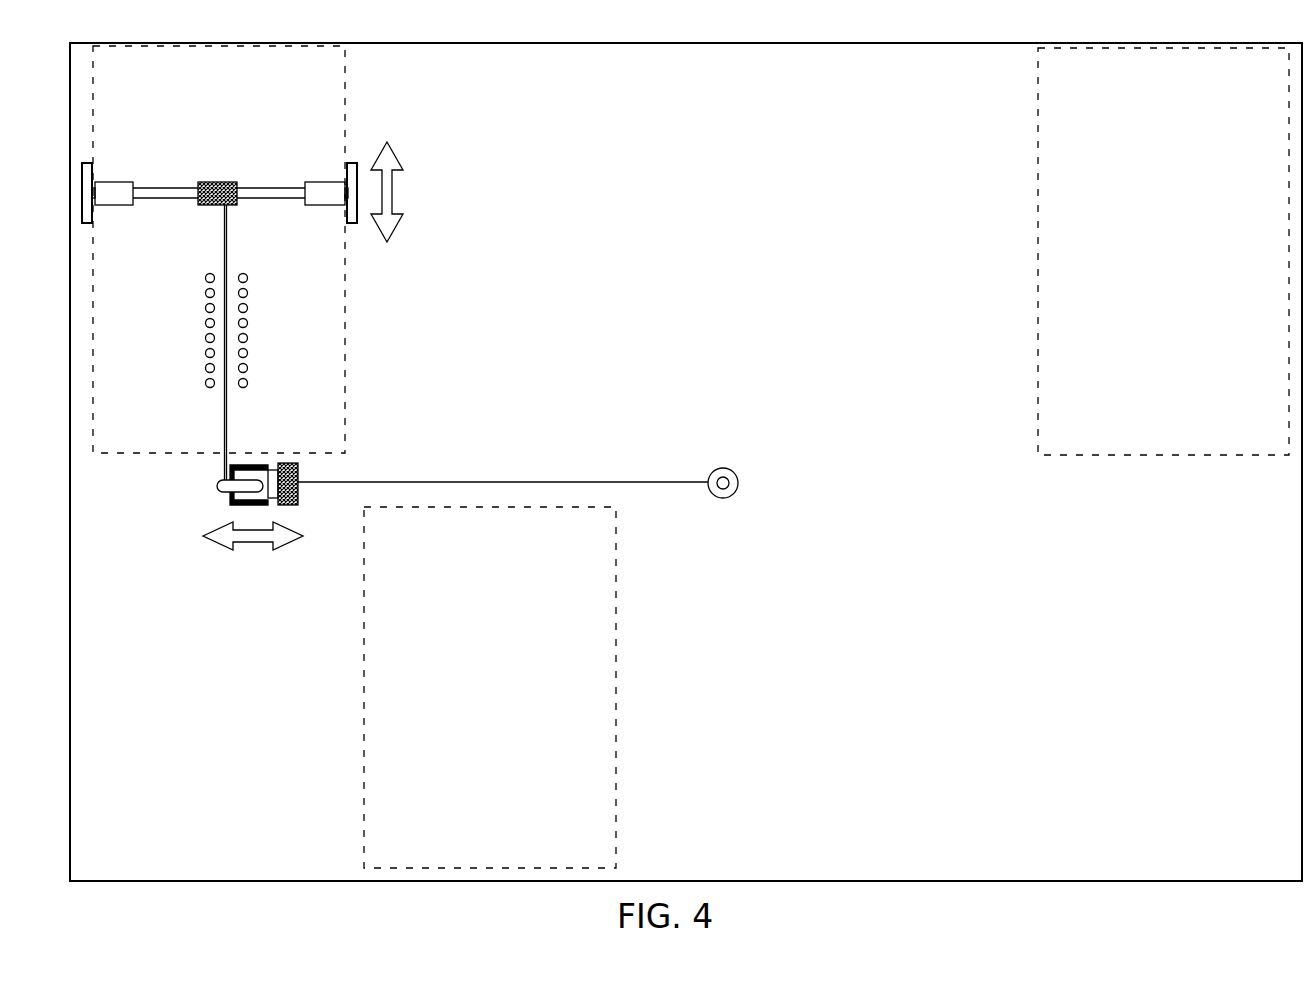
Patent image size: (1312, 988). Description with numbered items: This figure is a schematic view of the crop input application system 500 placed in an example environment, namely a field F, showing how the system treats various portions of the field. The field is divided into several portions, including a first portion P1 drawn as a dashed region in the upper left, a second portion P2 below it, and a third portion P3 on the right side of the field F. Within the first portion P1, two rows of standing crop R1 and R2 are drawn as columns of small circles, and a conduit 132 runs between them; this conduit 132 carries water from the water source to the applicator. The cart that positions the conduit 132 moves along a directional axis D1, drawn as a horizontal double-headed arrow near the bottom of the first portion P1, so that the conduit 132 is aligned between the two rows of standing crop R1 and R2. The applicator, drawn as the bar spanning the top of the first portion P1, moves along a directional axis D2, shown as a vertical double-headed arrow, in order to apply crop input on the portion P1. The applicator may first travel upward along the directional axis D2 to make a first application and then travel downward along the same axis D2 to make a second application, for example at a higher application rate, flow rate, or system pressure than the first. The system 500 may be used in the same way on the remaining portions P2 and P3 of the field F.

The frame F is at (587, 43).
The crop input application system 500 is at (410, 334).
The conduit 132 is at (224, 417).
The row of standing crop R1 is at (181, 340).
The row of standing crop R2 is at (275, 339).
The portion of a field P1 is at (345, 423).
The portion of a field P2 is at (617, 602).
The portion of a field P3 is at (1038, 360).
The directional axis D1 is at (253, 546).
The directional axis D2 is at (401, 192).